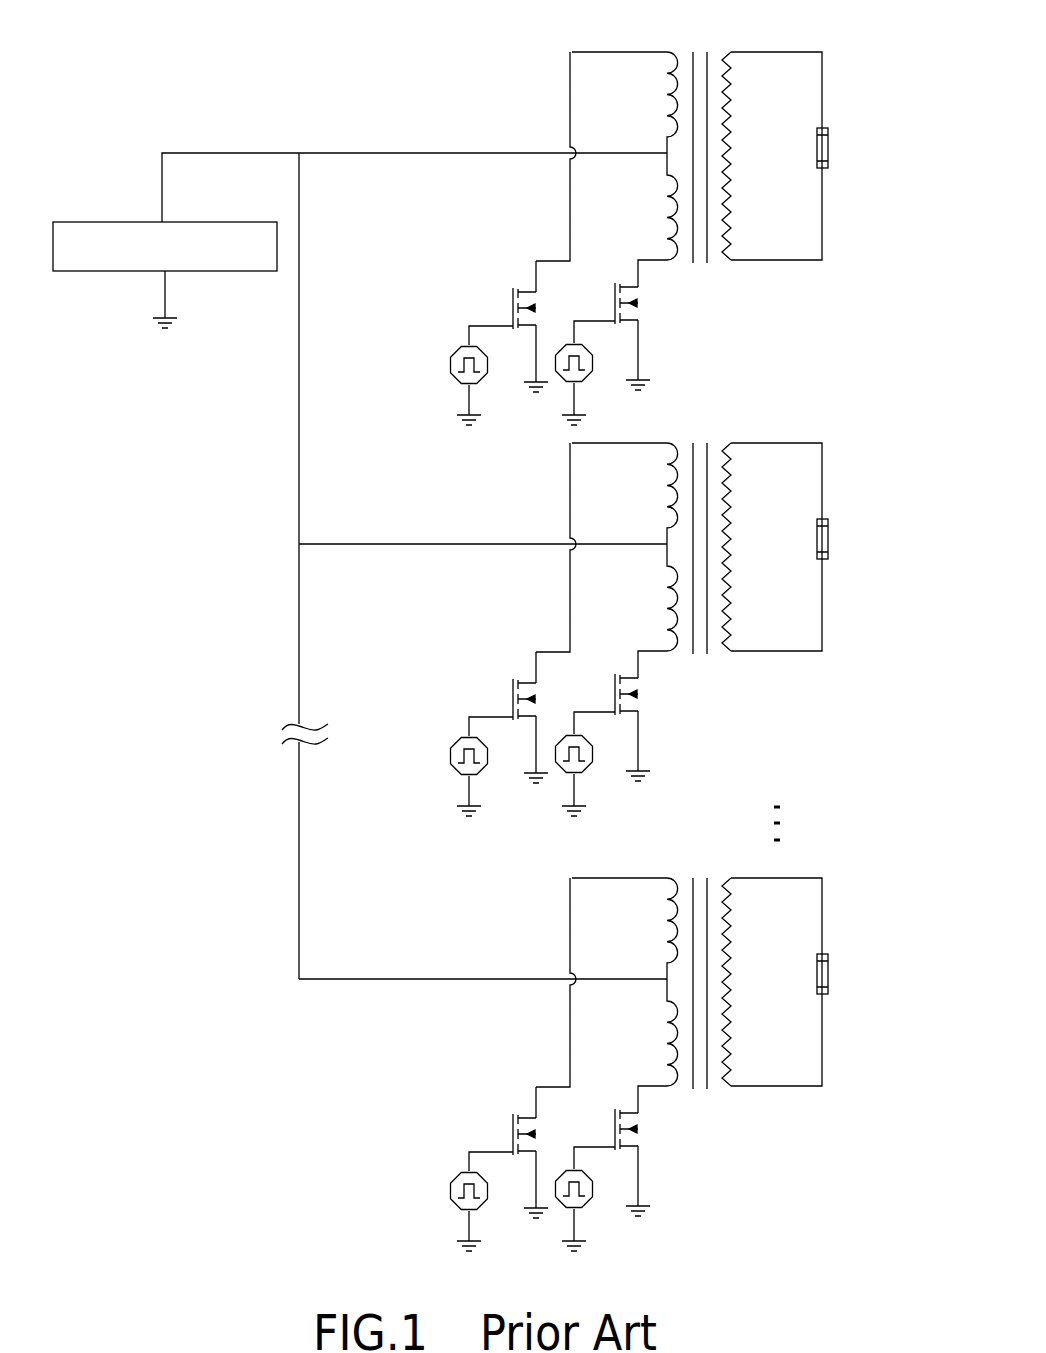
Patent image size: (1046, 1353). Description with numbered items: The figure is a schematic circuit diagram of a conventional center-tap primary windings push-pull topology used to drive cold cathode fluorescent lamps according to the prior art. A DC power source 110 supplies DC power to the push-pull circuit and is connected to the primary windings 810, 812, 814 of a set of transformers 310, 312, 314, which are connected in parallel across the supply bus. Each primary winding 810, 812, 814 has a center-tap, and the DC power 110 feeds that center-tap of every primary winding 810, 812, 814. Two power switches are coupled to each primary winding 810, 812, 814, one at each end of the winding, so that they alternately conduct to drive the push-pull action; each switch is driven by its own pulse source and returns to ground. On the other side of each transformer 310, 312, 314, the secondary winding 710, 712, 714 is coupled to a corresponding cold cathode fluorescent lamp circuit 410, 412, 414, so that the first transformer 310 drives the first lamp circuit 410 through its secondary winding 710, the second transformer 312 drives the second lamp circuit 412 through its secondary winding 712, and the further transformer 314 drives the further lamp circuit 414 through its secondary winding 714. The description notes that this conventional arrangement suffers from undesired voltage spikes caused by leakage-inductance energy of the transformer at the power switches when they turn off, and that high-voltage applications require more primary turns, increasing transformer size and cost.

The DC power 110 is at (113, 211).
The transformer 310 is at (702, 46).
The transformer 312 is at (702, 437).
The transformer 314 is at (718, 856).
The cold cathode fluorescent lamp circuit 410 is at (836, 159).
The cold cathode fluorescent lamp circuit 412 is at (838, 553).
The cold cathode fluorescent lamp circuit 414 is at (836, 982).
The secondary winding 710 is at (740, 176).
The secondary winding 712 is at (742, 548).
The secondary winding 714 is at (742, 978).
The primary winding 810 is at (658, 134).
The primary winding 812 is at (657, 526).
The primary winding 814 is at (657, 958).